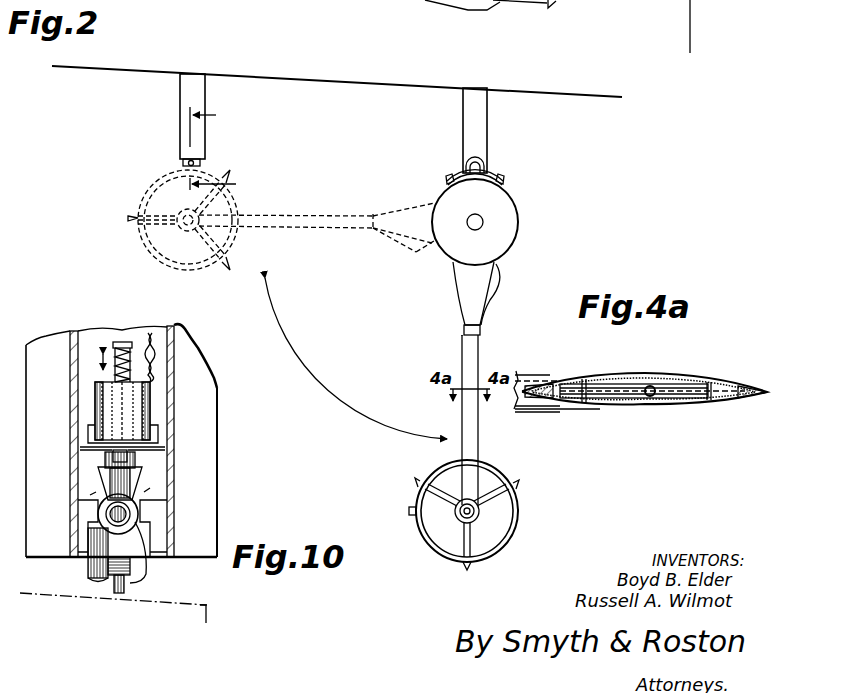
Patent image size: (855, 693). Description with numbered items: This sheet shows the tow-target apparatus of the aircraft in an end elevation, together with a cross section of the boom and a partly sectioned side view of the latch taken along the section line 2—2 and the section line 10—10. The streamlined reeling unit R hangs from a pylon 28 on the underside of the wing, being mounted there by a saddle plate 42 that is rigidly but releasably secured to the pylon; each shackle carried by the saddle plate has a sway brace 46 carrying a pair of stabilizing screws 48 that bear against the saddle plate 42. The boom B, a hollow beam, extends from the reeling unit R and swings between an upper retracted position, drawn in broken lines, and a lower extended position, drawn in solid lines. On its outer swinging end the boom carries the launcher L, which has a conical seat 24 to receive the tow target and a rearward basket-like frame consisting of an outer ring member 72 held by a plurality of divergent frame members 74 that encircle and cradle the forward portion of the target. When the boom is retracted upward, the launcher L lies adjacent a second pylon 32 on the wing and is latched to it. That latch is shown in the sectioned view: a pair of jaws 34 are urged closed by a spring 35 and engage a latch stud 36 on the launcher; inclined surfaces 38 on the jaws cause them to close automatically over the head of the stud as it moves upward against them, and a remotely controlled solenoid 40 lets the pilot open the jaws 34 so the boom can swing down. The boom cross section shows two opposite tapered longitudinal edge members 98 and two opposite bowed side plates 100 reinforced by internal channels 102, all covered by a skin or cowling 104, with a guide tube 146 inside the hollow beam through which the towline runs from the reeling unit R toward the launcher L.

In FIG. 2, the section line 2— 2 is at (693, 34).
In FIG. 2, the section line 10— 10 is at (225, 151).
In FIG. 10, the section line 10— 10 is at (219, 459).
In FIG. 2, the conical seat 24 is at (480, 511).
In FIG. 2, the pylon 28 is at (488, 128).
In FIG. 2, the second pylon 32 is at (178, 96).
In FIG. 2, the jaws 34 is at (201, 165).
In FIG. 10, the jaws 34 is at (88, 564).
In FIG. 10, the spring 35 is at (140, 532).
In FIG. 10, the latch stud 36 is at (112, 582).
In FIG. 10, the inclined surfaces 38 is at (131, 583).
In FIG. 10, the solenoid 40 is at (150, 416).
In FIG. 2, the saddle plate 42 is at (508, 190).
In FIG. 2, the sway brace 46 is at (488, 168).
In FIG. 2, the stabilizing screws 48 is at (450, 176).
In FIG. 2, the outer ring member 72 is at (488, 471).
In FIG. 2, the divergent frame members 74 is at (444, 503).
In FIG. 4A, the longitudinal edge members 98 is at (546, 386).
In FIG. 4A, the bowed side plates 100 is at (672, 378).
In FIG. 4A, the internal channels 102 is at (586, 384).
In FIG. 4A, the skin or cowling 104 is at (712, 402).
In FIG. 4A, the guide tube 146 is at (620, 410).
In FIG. 2, the reeling unit R is at (520, 209).
In FIG. 2, the boom B is at (460, 345).
In FIG. 2, the launcher L is at (521, 505).